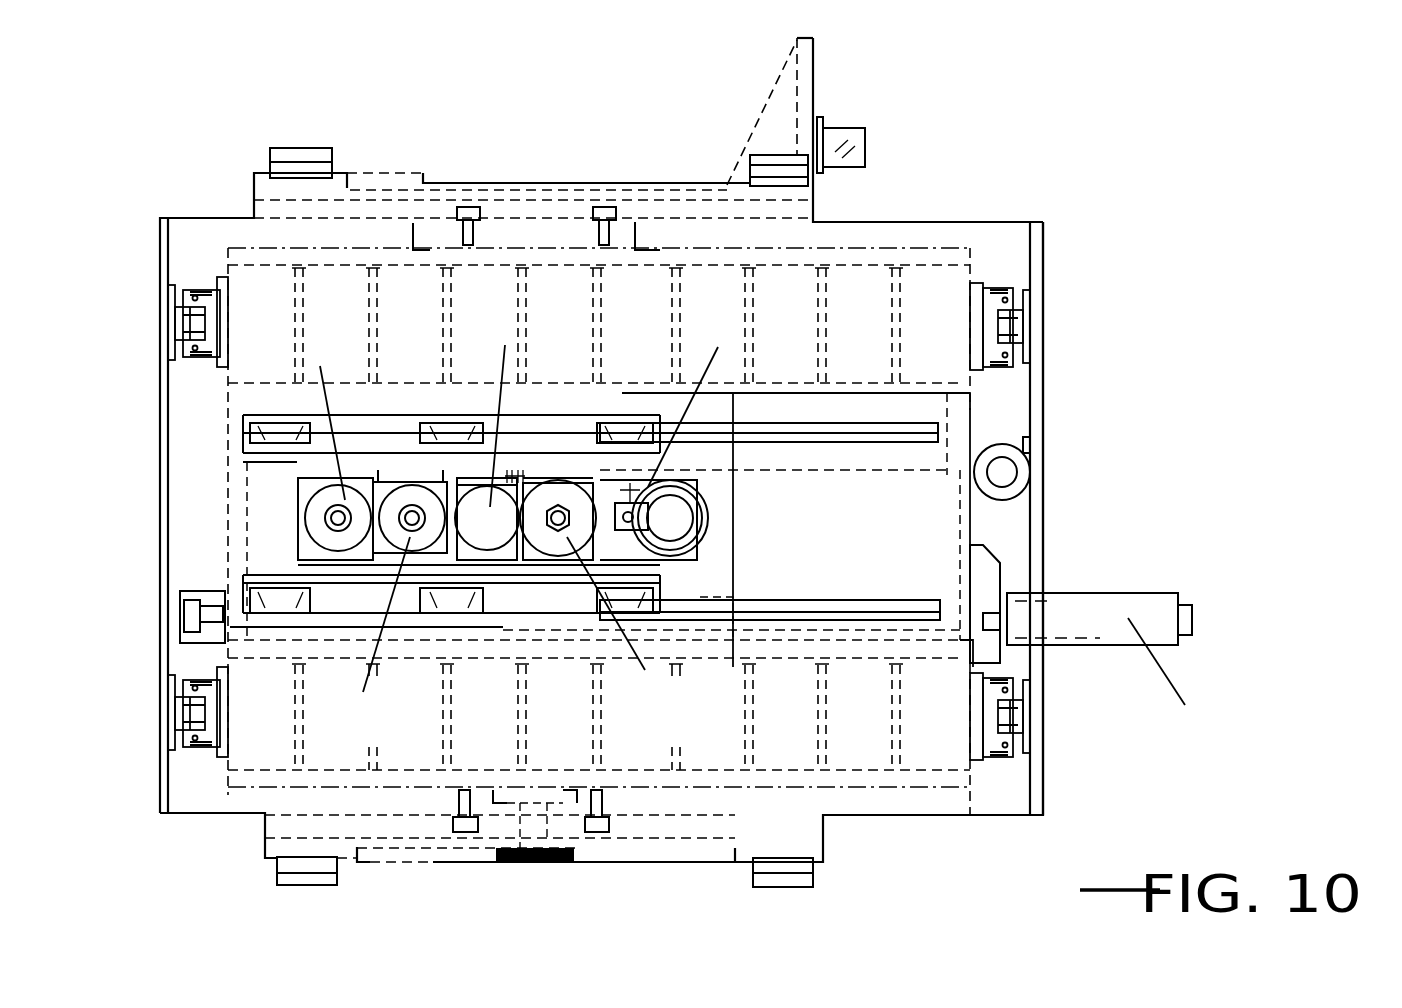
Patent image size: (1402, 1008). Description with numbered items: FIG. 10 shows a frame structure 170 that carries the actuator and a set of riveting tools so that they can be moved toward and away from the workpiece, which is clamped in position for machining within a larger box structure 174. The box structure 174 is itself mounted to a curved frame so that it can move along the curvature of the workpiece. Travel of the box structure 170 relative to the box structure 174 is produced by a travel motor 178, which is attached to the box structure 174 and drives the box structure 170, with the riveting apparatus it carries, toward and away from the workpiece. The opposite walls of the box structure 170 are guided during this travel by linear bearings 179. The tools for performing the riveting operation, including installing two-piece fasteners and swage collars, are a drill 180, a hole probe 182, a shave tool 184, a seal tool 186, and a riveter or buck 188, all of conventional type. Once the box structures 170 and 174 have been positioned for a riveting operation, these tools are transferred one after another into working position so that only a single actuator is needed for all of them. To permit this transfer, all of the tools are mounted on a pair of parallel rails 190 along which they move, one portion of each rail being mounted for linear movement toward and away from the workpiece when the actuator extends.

The frame structure 170 is at (985, 531).
The box structure 174 is at (1050, 370).
The travel motor 178 is at (1036, 452).
The linear bearings 179 is at (175, 309).
The drill 180 is at (566, 462).
The hole probe 182 is at (716, 510).
The shave tool 184 is at (290, 518).
The seal tool 186 is at (458, 470).
The riveter or buck 188 is at (447, 550).
The parallel rails 190 is at (816, 450).